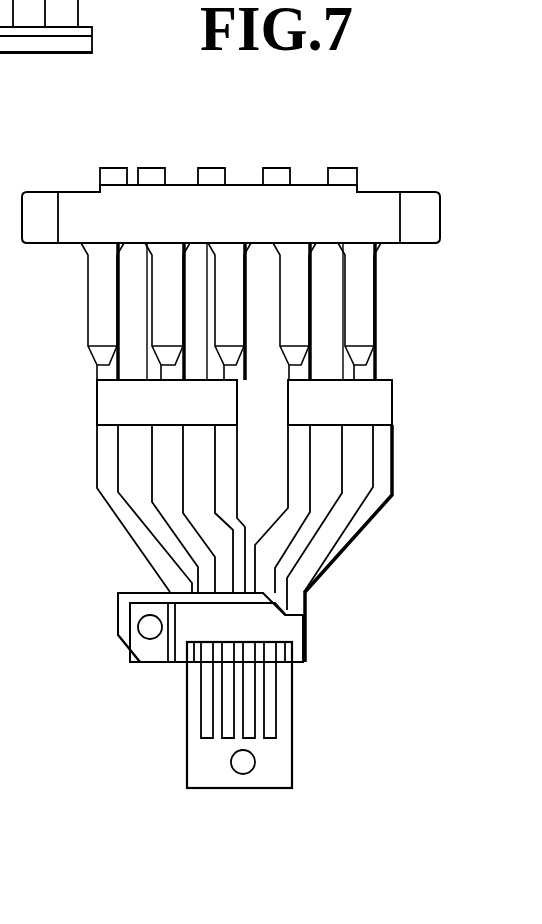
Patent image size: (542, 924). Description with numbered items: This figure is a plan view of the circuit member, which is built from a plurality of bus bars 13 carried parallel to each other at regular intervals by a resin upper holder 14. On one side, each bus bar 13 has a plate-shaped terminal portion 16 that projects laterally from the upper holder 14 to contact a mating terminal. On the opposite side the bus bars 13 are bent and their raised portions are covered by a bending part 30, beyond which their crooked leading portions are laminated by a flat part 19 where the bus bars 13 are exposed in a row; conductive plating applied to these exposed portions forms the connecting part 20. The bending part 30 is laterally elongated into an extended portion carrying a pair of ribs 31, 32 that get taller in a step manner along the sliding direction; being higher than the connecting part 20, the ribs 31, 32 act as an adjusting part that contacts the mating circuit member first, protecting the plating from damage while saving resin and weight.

The bus bars 13 is at (298, 470).
The upper holder 14 is at (302, 198).
The terminal portion 16 is at (355, 318).
The flat part 19 is at (275, 763).
The connecting part 20 is at (238, 655).
The bending part 30 is at (265, 625).
The rib 31 is at (125, 634).
The rib 32 is at (168, 646).